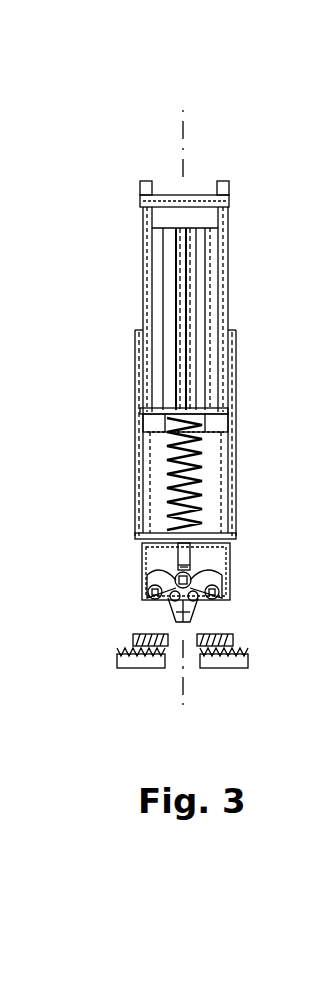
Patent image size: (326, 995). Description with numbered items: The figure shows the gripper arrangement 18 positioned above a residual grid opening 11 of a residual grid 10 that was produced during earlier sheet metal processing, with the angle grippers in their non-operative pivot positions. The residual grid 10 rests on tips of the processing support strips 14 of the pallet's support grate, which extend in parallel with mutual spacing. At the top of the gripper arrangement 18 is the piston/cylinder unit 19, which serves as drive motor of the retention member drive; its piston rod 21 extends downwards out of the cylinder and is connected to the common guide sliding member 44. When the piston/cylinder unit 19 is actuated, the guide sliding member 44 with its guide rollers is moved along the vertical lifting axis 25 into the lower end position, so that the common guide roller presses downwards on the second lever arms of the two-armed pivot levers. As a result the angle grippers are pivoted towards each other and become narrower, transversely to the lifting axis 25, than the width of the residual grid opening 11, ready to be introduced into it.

The lifting axis 25 is at (187, 135).
The gripper arrangement 18 is at (232, 235).
The piston/cylinder unit 19 is at (232, 305).
The piston rod 21 is at (190, 450).
The common guide sliding member 44 is at (210, 563).
The residual grid 10 is at (129, 632).
The processing support strips 14 is at (130, 662).
The residual grid opening 11 is at (177, 688).